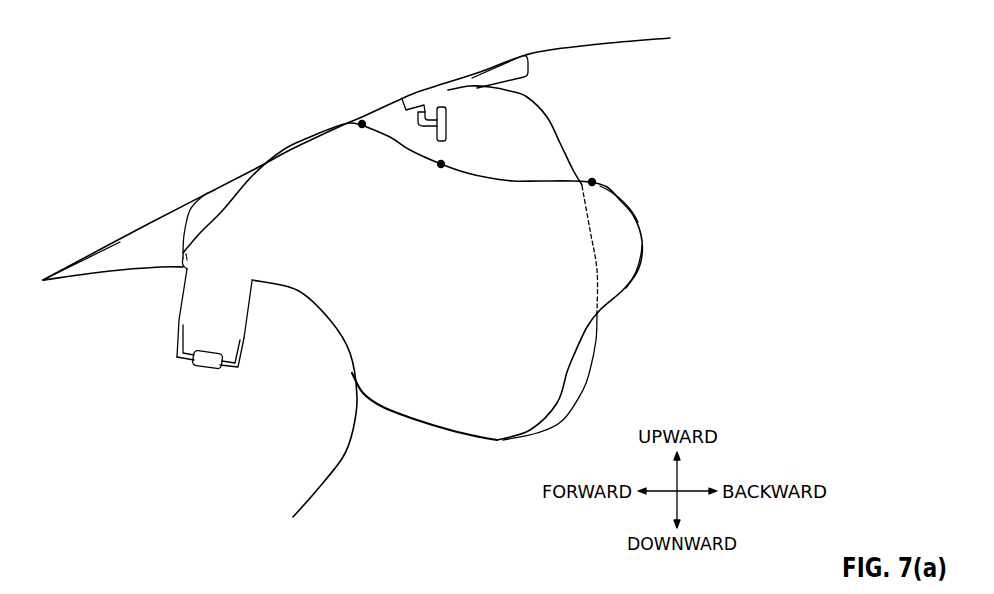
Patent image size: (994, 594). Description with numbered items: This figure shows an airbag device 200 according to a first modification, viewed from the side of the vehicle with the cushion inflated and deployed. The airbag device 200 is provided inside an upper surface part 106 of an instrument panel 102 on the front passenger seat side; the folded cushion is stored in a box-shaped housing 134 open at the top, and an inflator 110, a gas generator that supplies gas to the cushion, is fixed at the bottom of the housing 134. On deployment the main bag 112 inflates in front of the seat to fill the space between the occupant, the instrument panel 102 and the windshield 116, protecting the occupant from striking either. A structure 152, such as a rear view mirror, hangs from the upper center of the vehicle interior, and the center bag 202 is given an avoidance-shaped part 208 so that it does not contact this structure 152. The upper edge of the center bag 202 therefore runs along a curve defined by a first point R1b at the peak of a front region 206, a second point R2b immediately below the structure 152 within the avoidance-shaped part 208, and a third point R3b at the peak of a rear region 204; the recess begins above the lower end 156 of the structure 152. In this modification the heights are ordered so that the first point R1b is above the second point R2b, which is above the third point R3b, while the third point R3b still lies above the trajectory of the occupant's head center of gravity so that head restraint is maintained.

The airbag device 200 is at (170, 126).
The center bag 202 is at (643, 250).
The rear region 204 is at (617, 212).
The front region 206 is at (330, 148).
The avoidance-shaped part 208 is at (490, 176).
The first point R1b is at (359, 118).
The second point R2b is at (444, 168).
The third point R3b is at (600, 177).
The instrument panel 102 is at (335, 472).
The upper surface part 106 is at (252, 282).
The inflator 110 is at (205, 372).
The main bag 112 is at (533, 97).
The windshield 116 is at (105, 240).
The housing 134 is at (240, 360).
The structure 152 is at (440, 105).
The lower end 156 is at (443, 142).